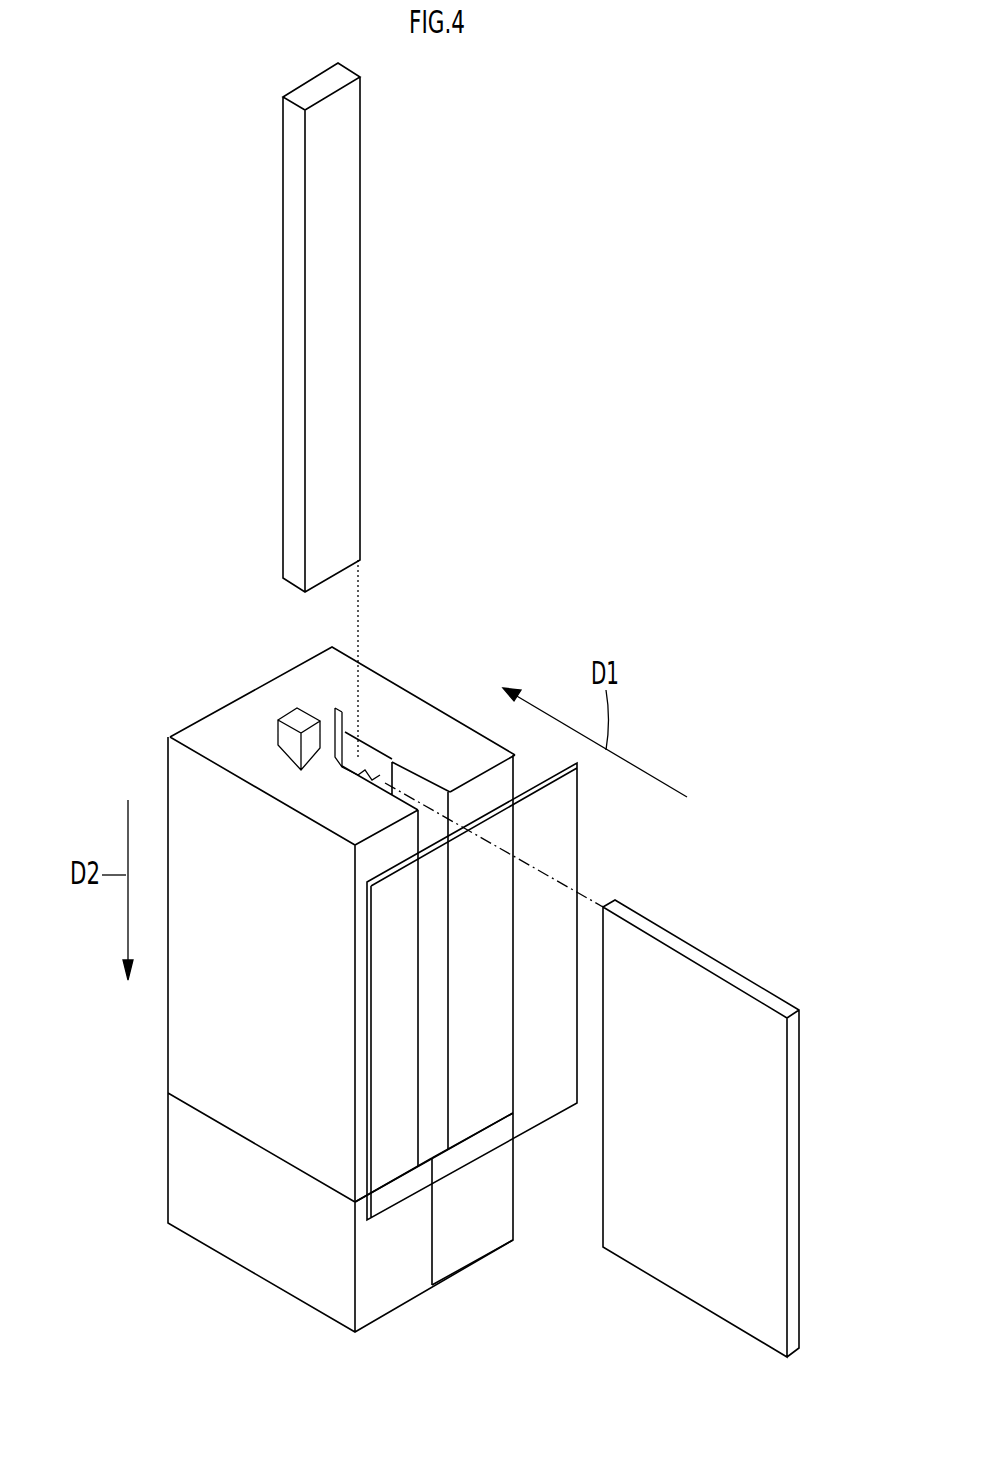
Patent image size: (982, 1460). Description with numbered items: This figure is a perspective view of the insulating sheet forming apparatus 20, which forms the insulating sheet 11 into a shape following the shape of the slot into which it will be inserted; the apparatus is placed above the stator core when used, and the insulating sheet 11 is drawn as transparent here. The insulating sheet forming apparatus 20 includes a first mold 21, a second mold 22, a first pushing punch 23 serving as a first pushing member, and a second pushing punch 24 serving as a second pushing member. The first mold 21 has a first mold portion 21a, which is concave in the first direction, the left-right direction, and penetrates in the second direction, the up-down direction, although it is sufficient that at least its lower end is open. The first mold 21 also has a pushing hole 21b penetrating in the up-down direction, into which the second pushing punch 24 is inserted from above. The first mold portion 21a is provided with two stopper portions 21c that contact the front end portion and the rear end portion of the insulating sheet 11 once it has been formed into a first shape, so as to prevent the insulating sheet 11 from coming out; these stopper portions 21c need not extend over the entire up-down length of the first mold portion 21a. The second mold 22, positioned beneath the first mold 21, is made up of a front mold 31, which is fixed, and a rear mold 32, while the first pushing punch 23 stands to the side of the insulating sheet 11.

The insulating sheet 11 is at (558, 848).
The insulating sheet forming apparatus 20 is at (473, 580).
The first mold 21 is at (477, 755).
The first mold portion 21a is at (307, 720).
The pushing hole 21b is at (290, 724).
The stopper portion 21c is at (380, 742).
The second mold 22 is at (233, 1268).
The first pushing punch 23 is at (707, 960).
The second pushing punch 24 is at (340, 285).
The front mold 31 is at (388, 1297).
The rear mold 32 is at (472, 1258).